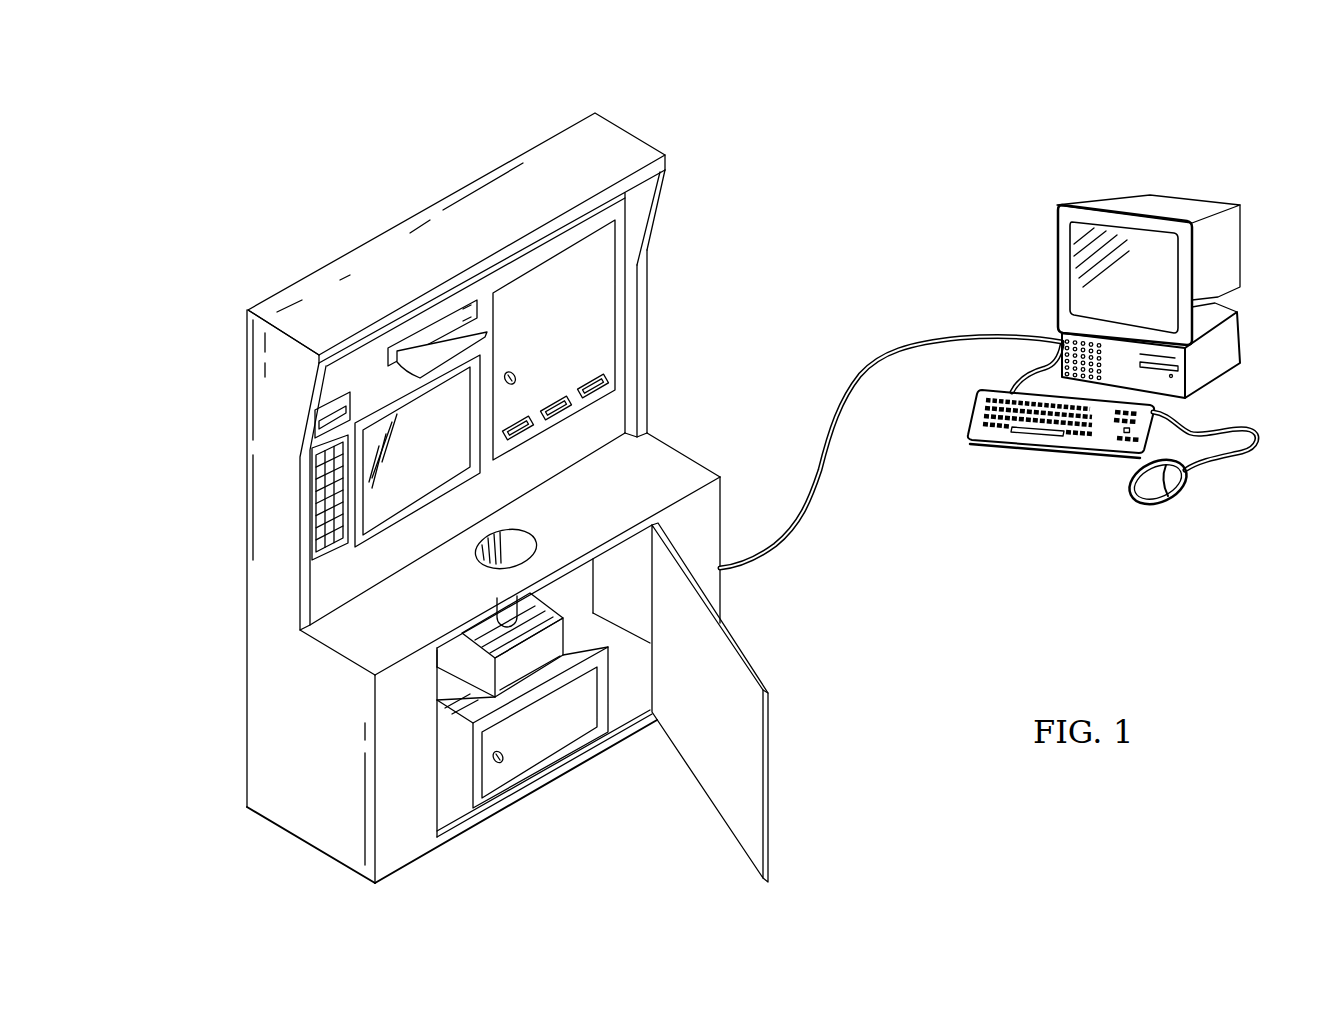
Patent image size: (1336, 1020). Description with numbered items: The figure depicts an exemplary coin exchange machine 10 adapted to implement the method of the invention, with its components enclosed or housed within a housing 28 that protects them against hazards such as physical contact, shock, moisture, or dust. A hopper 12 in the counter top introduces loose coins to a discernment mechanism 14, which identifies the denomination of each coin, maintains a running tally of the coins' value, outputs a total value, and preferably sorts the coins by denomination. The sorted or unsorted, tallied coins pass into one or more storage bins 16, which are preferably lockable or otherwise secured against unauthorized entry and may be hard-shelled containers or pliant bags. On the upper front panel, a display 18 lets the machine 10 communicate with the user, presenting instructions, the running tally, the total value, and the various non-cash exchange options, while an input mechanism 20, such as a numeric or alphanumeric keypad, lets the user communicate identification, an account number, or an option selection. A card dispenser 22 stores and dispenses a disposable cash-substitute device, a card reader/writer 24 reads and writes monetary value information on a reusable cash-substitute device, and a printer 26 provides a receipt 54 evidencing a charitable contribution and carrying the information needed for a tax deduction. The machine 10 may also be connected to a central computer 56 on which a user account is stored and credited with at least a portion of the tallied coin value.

The coin exchange machine 10 is at (230, 76).
The hopper 12 is at (511, 557).
The discernment mechanism 14 is at (537, 651).
The storage bins 16 is at (546, 737).
The display 18 is at (415, 480).
The input mechanism 20 is at (330, 512).
The card dispenser 22 is at (601, 307).
The card reader/writer 24 is at (335, 410).
The printer 26 is at (414, 340).
The housing 28 is at (298, 822).
The receipt 54 is at (449, 340).
The central computer 56 is at (1015, 225).